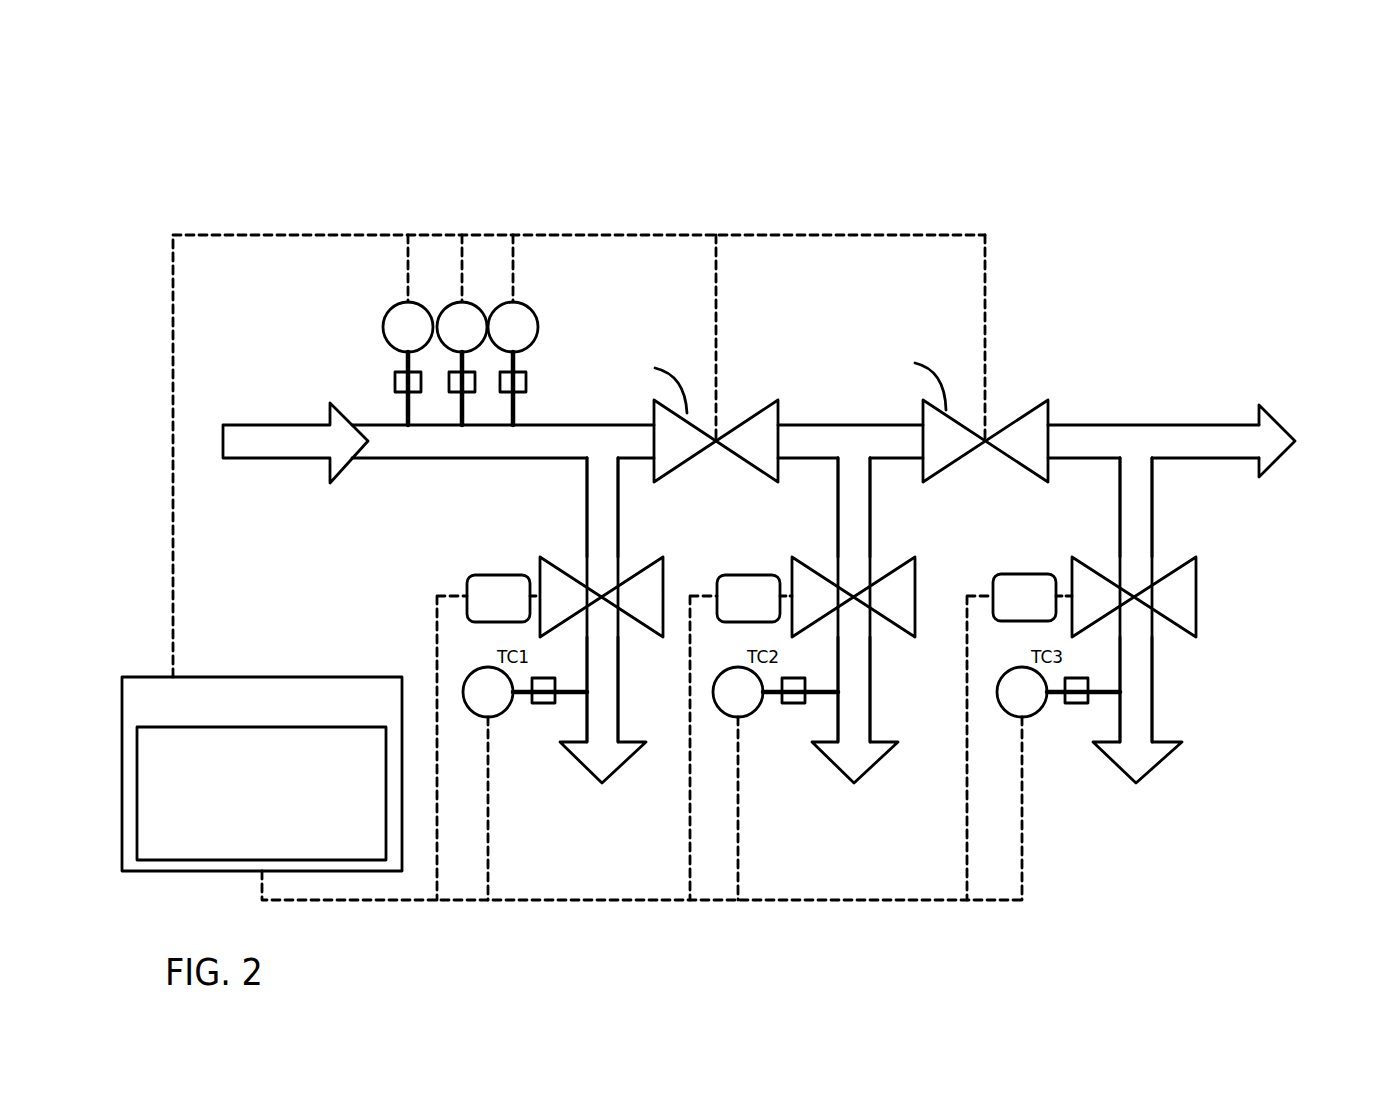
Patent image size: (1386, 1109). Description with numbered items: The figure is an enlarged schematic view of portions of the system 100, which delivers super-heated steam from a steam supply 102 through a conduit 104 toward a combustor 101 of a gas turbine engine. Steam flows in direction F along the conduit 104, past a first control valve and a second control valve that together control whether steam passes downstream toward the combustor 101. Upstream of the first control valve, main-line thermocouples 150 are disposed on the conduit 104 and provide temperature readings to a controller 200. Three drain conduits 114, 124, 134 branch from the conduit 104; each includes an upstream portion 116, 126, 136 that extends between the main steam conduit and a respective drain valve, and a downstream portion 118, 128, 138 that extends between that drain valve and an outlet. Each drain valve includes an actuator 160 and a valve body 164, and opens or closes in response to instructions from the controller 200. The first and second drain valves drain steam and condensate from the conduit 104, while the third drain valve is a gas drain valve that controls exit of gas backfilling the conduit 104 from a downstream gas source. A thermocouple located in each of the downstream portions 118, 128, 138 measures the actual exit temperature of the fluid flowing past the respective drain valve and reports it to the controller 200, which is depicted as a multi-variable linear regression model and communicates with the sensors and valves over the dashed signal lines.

The system 100 is at (282, 172).
The combustor 101 is at (1296, 465).
The steam supply 102 is at (286, 462).
The conduit 104 is at (1235, 423).
The first drain conduit 114 is at (626, 814).
The upstream portion of first drain conduit 116 is at (610, 532).
The downstream portion of first drain conduit 118 is at (610, 695).
The second drain conduit 124 is at (878, 814).
The upstream portion of second drain conduit 126 is at (862, 532).
The downstream portion of second drain conduit 128 is at (862, 695).
The third drain conduit 134 is at (1164, 814).
The upstream portion of third drain conduit 136 is at (1144, 532).
The downstream portion of third drain conduit 138 is at (1144, 695).
The main-line thermocouples 150 is at (397, 213).
The actuator 160 is at (481, 612).
The valve body 164 is at (567, 588).
The controller 200 is at (330, 675).